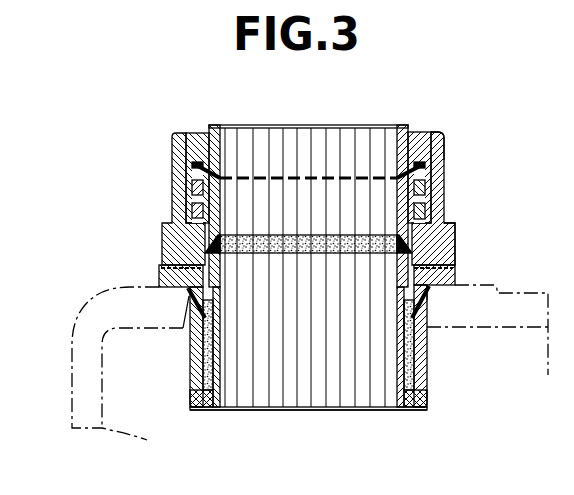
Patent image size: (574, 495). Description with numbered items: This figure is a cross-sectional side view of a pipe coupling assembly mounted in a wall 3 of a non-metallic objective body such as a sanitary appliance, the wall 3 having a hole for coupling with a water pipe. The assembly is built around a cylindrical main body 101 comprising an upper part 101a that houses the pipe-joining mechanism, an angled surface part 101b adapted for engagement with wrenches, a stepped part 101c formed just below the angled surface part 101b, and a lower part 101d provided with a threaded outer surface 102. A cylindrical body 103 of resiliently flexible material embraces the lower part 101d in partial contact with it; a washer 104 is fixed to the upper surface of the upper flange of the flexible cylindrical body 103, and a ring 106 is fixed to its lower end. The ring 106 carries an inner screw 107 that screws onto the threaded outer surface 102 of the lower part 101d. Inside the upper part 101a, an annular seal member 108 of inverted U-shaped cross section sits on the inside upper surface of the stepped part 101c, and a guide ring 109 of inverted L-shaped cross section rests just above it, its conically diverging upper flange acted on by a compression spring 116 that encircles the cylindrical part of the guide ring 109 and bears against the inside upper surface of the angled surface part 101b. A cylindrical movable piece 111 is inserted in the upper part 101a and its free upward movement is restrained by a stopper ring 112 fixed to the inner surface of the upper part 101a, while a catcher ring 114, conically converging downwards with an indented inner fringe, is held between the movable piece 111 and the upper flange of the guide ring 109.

The wall 3 is at (82, 312).
The cylindrical main body 101 is at (440, 210).
The upper part 101a is at (437, 147).
The angled surface part 101b is at (447, 243).
The stepped part 101c is at (428, 290).
The lower part 101d is at (402, 298).
The threaded outer surface 102 is at (203, 352).
The cylindrical body 103 is at (420, 355).
The washer 104 is at (448, 267).
The ring 106 is at (200, 412).
The inner screw 107 is at (195, 397).
The annular seal member 108 is at (215, 246).
The guide ring 109 is at (192, 176).
The movable piece 111 is at (400, 124).
The stopper ring 112 is at (416, 132).
The catcher ring 114 is at (247, 178).
The compression spring 116 is at (192, 203).